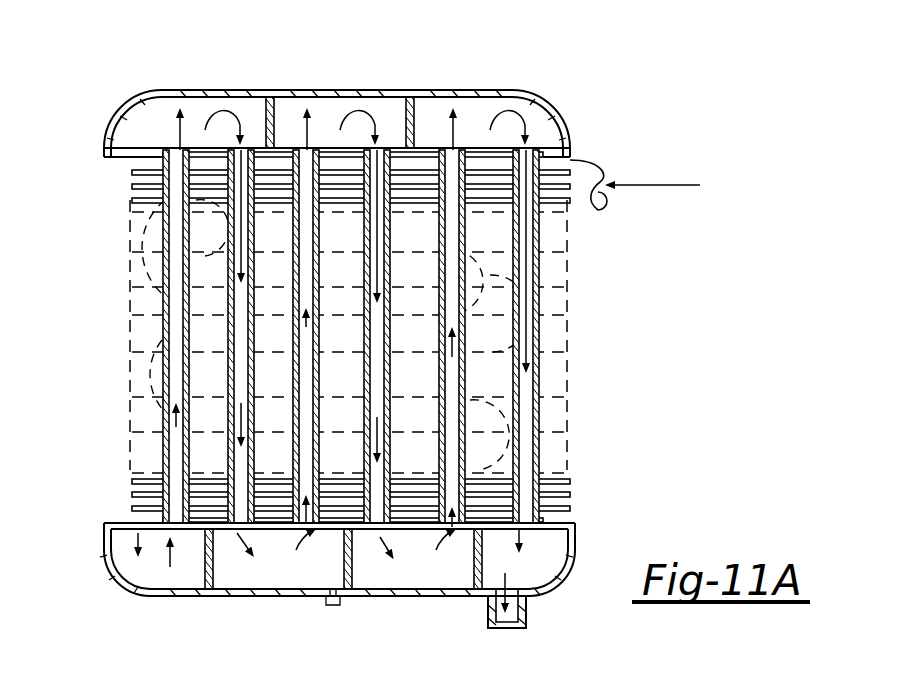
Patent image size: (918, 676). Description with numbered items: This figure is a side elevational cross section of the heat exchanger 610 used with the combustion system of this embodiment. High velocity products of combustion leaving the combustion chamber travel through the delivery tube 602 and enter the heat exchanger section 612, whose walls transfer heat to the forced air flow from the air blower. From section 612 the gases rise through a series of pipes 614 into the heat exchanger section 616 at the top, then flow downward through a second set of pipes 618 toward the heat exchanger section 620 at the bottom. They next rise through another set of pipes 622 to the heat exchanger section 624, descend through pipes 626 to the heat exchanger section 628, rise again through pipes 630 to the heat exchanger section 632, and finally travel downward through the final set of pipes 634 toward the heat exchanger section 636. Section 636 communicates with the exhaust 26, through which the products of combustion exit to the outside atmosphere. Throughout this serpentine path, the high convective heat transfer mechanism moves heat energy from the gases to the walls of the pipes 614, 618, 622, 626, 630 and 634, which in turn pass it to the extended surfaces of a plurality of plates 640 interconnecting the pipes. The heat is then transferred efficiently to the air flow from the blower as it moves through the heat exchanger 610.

The heat exchanger 610 is at (116, 82).
The heat exchanger section 612 is at (133, 568).
The pipes 614 is at (176, 383).
The heat exchanger section 616 is at (195, 115).
The pipes 618 is at (240, 293).
The heat exchanger section 620 is at (245, 578).
The pipes 622 is at (300, 450).
The heat exchanger section 624 is at (320, 108).
The pipes 626 is at (376, 232).
The heat exchanger section 628 is at (372, 578).
The pipes 630 is at (455, 277).
The heat exchanger section 632 is at (482, 110).
The pipes 634 is at (520, 392).
The heat exchanger section 636 is at (550, 548).
The plates 640 is at (565, 485).
The delivery tube 602 is at (545, 311).
The exhaust 26 is at (527, 602).